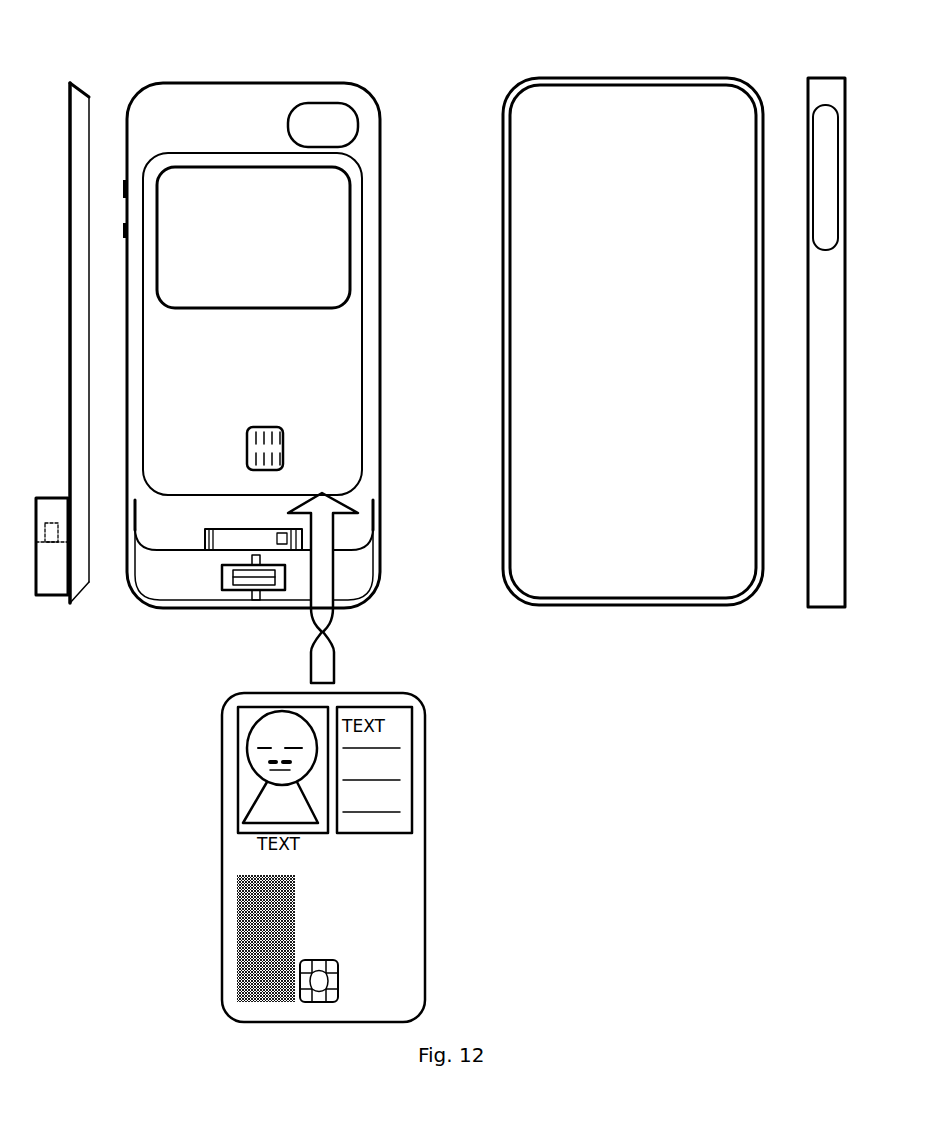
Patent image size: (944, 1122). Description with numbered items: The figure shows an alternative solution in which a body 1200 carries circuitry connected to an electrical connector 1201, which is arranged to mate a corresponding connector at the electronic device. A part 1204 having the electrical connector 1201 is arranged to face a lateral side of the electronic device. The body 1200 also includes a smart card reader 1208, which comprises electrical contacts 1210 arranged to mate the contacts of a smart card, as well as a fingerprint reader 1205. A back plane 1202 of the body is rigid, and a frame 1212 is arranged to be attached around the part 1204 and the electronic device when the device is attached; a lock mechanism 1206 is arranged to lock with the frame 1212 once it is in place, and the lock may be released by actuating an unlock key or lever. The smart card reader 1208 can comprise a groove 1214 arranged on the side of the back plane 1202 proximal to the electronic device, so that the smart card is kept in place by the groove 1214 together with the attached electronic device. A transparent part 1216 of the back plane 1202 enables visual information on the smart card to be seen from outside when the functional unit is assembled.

The body 1200 is at (242, 115).
The electrical connector 1201 is at (240, 533).
The back plane 1202 is at (84, 198).
The part 1204 is at (350, 572).
The fingerprint reader 1205 is at (257, 575).
The lock mechanism 1206 is at (73, 83).
The smart card reader 1208 is at (338, 450).
The electrical contacts 1210 is at (262, 448).
The frame 1212 is at (612, 78).
The groove 1214 is at (338, 355).
The transparent part 1216 is at (333, 262).